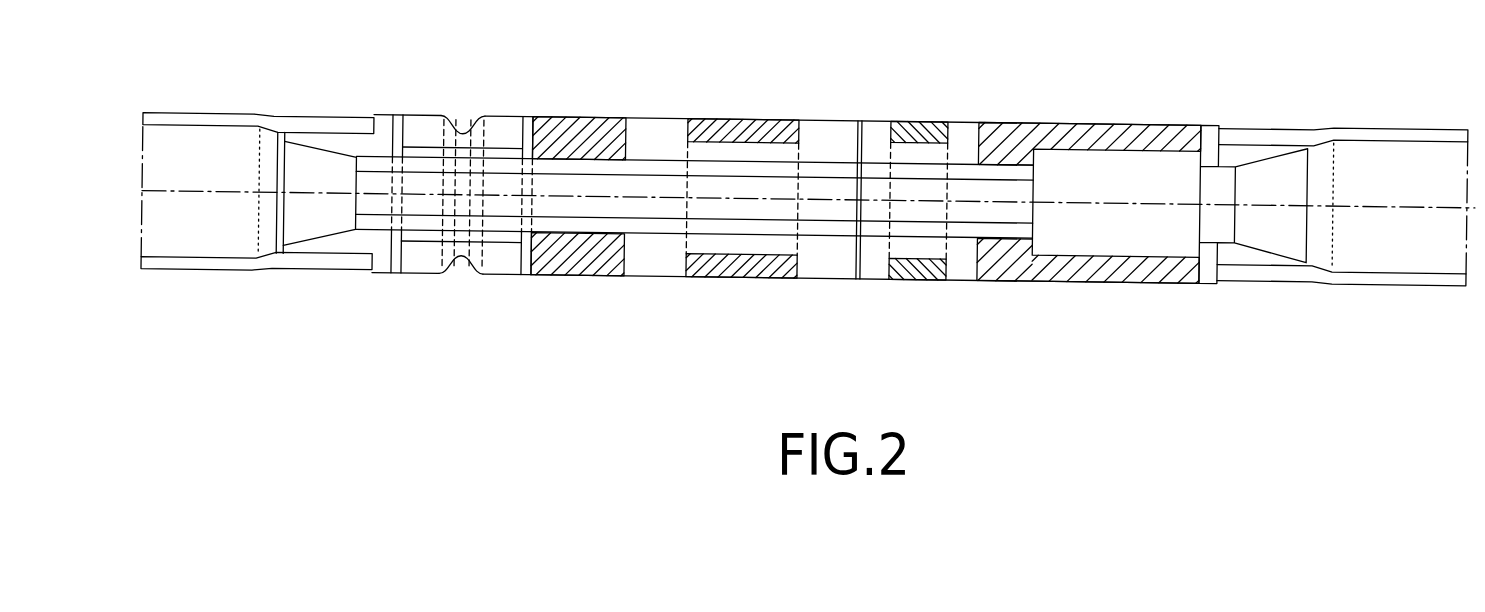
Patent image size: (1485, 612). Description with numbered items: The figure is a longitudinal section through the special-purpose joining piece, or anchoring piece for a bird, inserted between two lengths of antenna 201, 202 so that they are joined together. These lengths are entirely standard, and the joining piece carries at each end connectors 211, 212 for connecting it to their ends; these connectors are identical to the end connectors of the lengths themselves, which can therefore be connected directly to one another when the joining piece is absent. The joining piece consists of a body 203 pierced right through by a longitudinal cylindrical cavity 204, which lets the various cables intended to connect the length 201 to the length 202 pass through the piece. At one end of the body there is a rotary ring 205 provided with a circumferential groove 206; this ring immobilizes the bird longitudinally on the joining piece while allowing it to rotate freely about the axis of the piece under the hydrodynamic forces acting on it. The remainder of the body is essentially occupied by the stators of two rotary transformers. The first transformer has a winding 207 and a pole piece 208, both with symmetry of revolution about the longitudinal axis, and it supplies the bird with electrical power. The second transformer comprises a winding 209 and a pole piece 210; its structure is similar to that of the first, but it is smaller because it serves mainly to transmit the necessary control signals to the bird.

The length of antenna 201 is at (196, 240).
The length of antenna 202 is at (1423, 252).
The body 203 is at (657, 117).
The longitudinal cylindrical cavity 204 is at (663, 205).
The rotary ring 205 is at (423, 260).
The circumferential groove 206 is at (462, 270).
The winding 207 is at (727, 267).
The pole piece 208 is at (840, 253).
The winding 209 is at (932, 268).
The pole piece 210 is at (963, 258).
The connector 211 is at (382, 258).
The connector 212 is at (1210, 267).